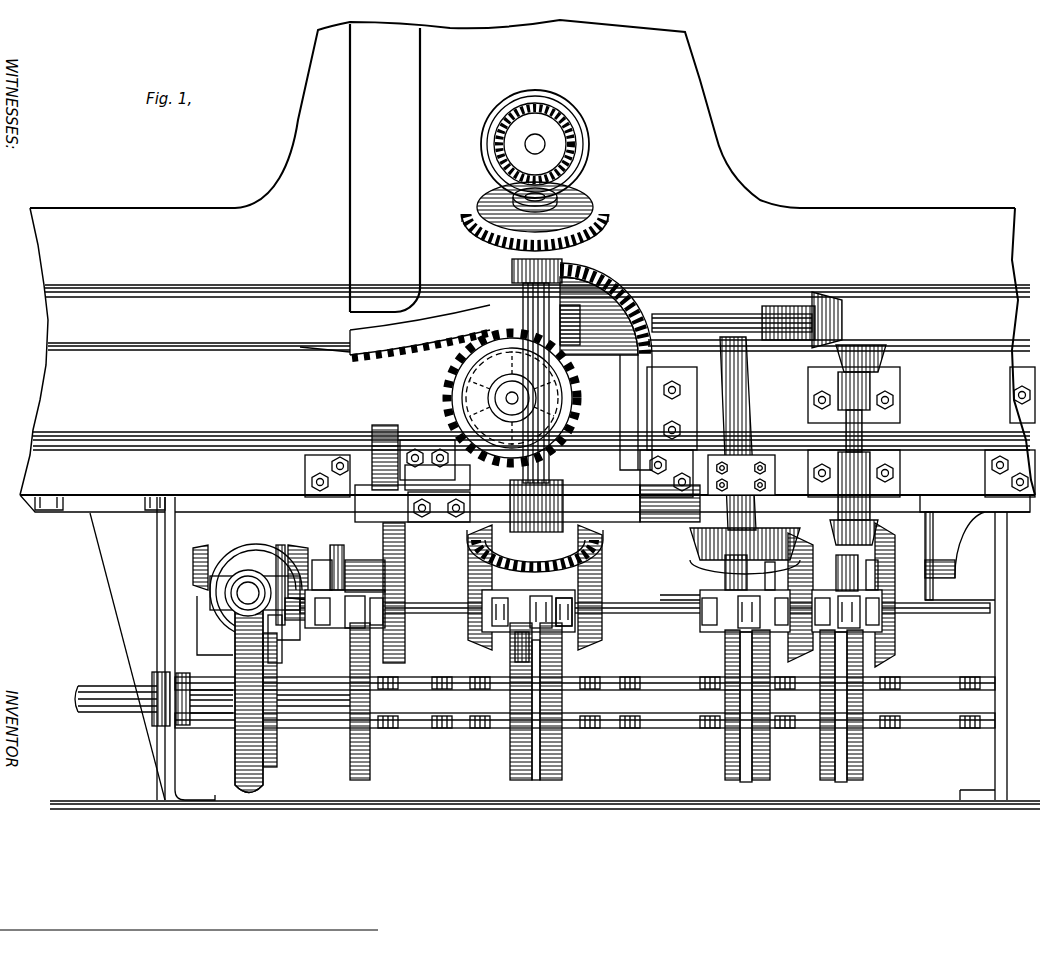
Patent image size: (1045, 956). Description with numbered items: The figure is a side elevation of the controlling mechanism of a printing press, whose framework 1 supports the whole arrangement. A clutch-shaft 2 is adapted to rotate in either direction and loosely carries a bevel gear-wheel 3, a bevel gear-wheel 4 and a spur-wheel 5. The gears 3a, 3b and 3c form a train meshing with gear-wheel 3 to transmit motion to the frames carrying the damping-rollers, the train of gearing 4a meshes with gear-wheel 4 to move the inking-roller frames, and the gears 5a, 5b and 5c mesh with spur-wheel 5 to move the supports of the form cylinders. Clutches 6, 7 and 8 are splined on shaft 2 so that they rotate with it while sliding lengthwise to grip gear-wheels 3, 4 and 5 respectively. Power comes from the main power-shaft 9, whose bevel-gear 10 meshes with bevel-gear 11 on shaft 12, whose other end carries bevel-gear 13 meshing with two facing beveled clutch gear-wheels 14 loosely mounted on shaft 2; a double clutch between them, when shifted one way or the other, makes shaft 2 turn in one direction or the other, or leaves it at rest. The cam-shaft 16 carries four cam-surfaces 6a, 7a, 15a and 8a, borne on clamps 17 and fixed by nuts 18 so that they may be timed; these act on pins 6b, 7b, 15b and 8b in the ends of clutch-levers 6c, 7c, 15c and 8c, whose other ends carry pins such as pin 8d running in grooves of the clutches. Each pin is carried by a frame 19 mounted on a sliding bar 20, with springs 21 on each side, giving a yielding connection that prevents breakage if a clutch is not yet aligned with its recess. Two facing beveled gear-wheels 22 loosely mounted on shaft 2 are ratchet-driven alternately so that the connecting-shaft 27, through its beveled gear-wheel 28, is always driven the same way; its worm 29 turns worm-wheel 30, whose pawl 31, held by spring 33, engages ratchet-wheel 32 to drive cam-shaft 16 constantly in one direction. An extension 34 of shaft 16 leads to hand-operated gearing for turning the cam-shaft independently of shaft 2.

The framework 1 is at (826, 218).
The clutch-shaft 2 is at (673, 596).
The bevel gear-wheel 3 is at (886, 545).
The gear of damping train 3a is at (880, 350).
The gear of damping train 3b is at (568, 318).
The gear of damping train 3c is at (600, 282).
The bevel gear-wheel 4 is at (805, 545).
The train of gearing 4a is at (748, 381).
The spur-wheel 5 is at (404, 638).
The gear of form-cylinder train 5a is at (393, 435).
The gear of form-cylinder train 5b is at (448, 386).
The gear of form-cylinder train 5c is at (352, 311).
The clutch 6 is at (838, 578).
The cam-surface 6a is at (862, 749).
The pin 6b is at (838, 628).
The clutch-lever 6c is at (882, 602).
The clutch 7 is at (732, 566).
The cam-surface 7a is at (728, 766).
The pin 7b is at (742, 636).
The clutch-lever 7c is at (726, 579).
The clutch 8 is at (340, 566).
The cam-surface 8a is at (372, 751).
The pin 8b is at (324, 628).
The clutch-lever 8c is at (357, 568).
The pin 8d is at (334, 545).
The main power-shaft 9 is at (552, 145).
The bevel-gear 10 is at (570, 156).
The bevel-gear 11 is at (600, 224).
The shaft 12 is at (525, 290).
The bevel-gear 13 is at (592, 548).
The beveled clutch gear-wheel 14 is at (468, 634).
The cam-surface 15a is at (562, 755).
The pin 15b is at (525, 634).
The clutch-lever 15c is at (500, 606).
The cam-shaft 16 is at (225, 730).
The clamp 17 is at (455, 680).
The nut 18 is at (392, 684).
The frame 19 is at (624, 606).
The sliding bar 20 is at (645, 609).
The spring 21 is at (776, 642).
The beveled gear-wheel 22 is at (203, 548).
The connecting-shaft 27 is at (246, 593).
The beveled gear-wheel 28 is at (246, 548).
The worm 29 is at (240, 608).
The worm-wheel 30 is at (236, 768).
The pawl 31 is at (276, 648).
The ratchet-wheel 32 is at (278, 748).
The spring 33 is at (283, 568).
The extension 34 is at (90, 690).